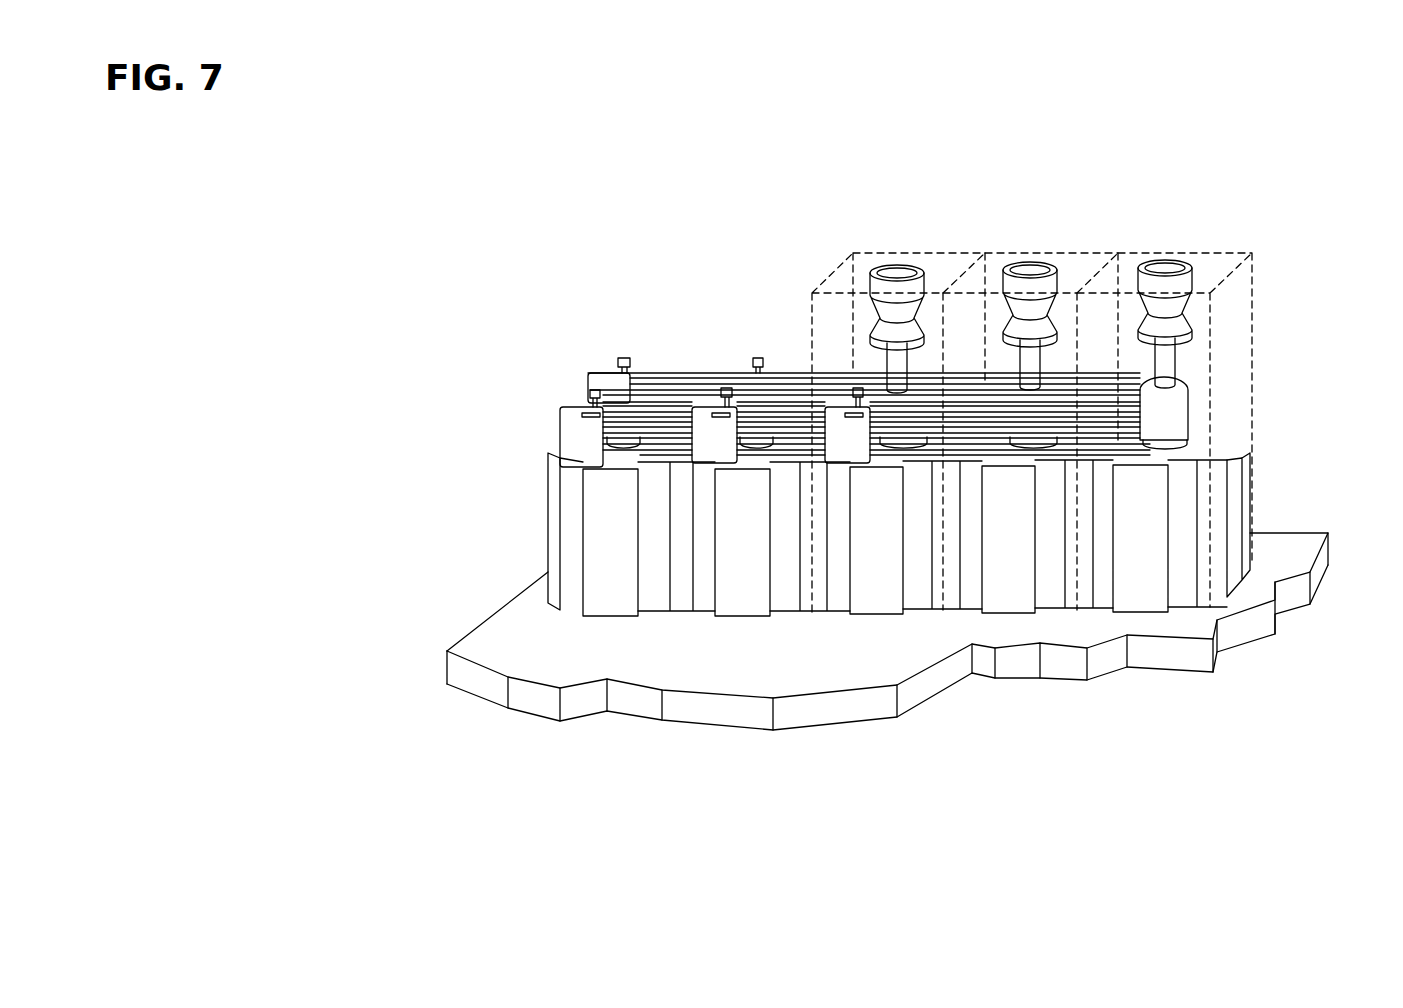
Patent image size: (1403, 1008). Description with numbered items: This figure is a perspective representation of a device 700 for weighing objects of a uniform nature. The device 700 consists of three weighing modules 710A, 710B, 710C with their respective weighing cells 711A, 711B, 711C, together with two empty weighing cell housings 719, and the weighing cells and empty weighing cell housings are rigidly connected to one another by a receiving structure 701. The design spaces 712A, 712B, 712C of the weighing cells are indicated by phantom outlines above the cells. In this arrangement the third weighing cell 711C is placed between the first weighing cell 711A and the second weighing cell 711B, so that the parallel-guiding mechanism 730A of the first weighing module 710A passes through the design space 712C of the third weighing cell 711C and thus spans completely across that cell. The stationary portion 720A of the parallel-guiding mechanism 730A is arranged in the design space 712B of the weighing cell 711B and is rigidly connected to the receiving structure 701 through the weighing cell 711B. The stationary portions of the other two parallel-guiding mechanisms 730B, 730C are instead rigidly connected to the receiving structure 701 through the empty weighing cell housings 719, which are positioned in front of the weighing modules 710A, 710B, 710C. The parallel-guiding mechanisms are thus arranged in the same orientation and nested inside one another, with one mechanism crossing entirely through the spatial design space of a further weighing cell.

The device 700 is at (538, 278).
The receiving structure 701 is at (538, 644).
The empty weighing cell housings 719 is at (612, 450).
The parallel-guiding mechanism 730A is at (955, 350).
The parallel-guiding mechanism 730B is at (670, 343).
The parallel-guiding mechanism 730C is at (795, 350).
The design space 712A is at (1237, 300).
The design space 712B is at (943, 265).
The design space 712C is at (1083, 263).
The stationary portion 720A is at (845, 443).
The first weighing cell 711A is at (1180, 533).
The second weighing cell 711B is at (866, 513).
The third weighing cell 711C is at (996, 513).
The first weighing module 710A is at (1211, 653).
The second weighing module 710B is at (596, 565).
The third weighing module 710C is at (1008, 657).